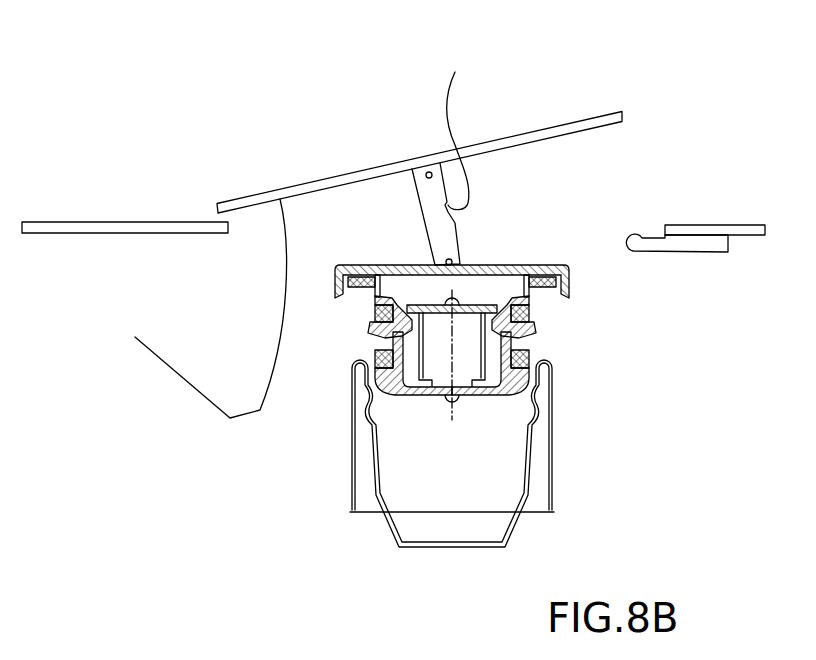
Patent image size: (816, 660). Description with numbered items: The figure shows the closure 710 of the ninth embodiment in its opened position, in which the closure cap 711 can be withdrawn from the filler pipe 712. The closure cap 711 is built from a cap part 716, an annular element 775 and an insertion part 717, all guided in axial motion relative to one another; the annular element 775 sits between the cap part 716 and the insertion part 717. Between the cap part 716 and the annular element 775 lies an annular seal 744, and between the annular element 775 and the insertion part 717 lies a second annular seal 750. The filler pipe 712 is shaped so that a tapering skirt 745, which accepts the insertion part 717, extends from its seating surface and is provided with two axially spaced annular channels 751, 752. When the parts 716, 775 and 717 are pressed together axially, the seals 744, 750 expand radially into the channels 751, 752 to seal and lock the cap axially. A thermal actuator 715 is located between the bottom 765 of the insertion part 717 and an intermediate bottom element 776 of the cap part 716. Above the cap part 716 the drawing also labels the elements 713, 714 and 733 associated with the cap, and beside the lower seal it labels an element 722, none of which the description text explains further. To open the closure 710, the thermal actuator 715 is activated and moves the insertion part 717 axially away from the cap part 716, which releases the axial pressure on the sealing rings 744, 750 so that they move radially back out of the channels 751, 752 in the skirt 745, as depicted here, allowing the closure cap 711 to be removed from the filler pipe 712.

The closure 710 is at (244, 121).
The closure cap 711 is at (578, 257).
The filler pipe 712 is at (554, 450).
The pivoting plate 713 is at (601, 112).
The bracket arm 714 is at (413, 202).
The thermal actuator 715 is at (472, 364).
The cap part 716 is at (513, 265).
The insertion part 717 is at (436, 412).
The lower seal 722 is at (530, 370).
The spring wire 733 is at (468, 130).
The annular seal 744 is at (533, 318).
The skirt 745 is at (522, 494).
The annular seal 750 is at (545, 356).
The annular channel 751 is at (522, 403).
The annular channel 752 is at (524, 440).
The bottom of the insertion part 765 is at (422, 395).
The annular element 775 is at (373, 342).
The intermediate bottom element 776 is at (413, 298).